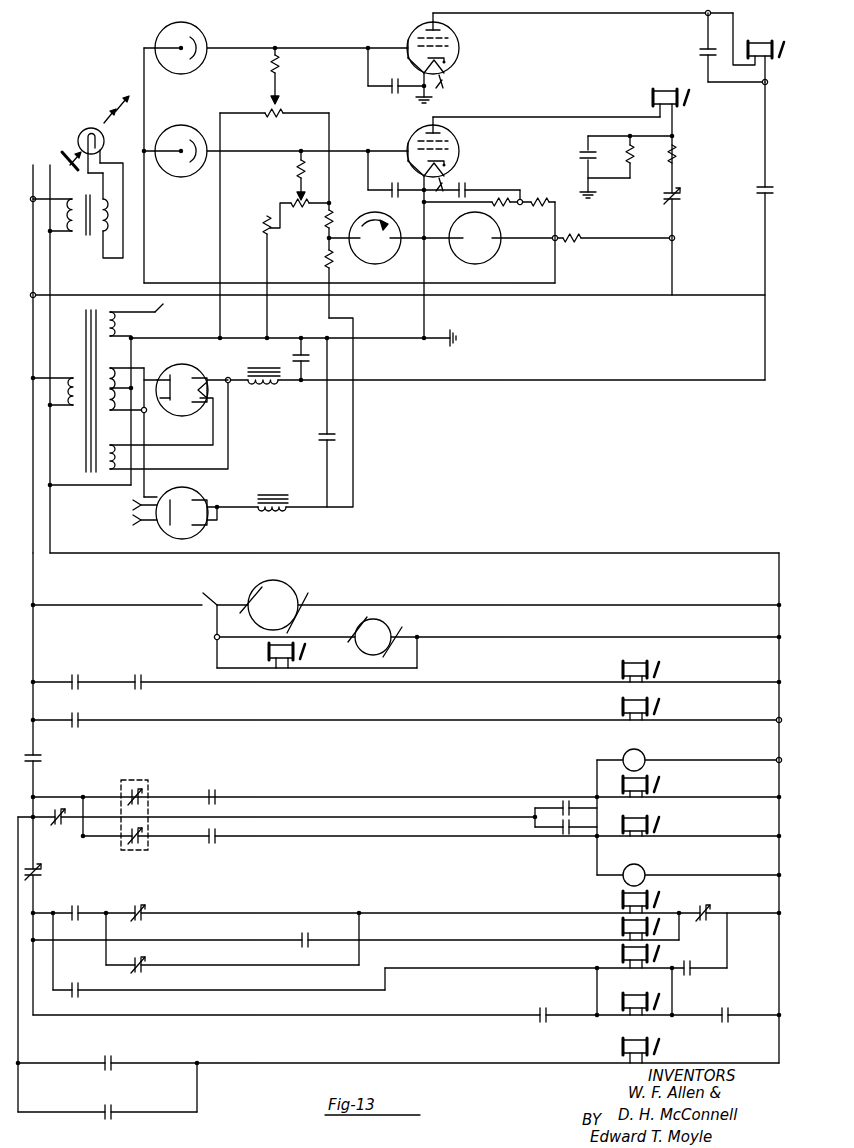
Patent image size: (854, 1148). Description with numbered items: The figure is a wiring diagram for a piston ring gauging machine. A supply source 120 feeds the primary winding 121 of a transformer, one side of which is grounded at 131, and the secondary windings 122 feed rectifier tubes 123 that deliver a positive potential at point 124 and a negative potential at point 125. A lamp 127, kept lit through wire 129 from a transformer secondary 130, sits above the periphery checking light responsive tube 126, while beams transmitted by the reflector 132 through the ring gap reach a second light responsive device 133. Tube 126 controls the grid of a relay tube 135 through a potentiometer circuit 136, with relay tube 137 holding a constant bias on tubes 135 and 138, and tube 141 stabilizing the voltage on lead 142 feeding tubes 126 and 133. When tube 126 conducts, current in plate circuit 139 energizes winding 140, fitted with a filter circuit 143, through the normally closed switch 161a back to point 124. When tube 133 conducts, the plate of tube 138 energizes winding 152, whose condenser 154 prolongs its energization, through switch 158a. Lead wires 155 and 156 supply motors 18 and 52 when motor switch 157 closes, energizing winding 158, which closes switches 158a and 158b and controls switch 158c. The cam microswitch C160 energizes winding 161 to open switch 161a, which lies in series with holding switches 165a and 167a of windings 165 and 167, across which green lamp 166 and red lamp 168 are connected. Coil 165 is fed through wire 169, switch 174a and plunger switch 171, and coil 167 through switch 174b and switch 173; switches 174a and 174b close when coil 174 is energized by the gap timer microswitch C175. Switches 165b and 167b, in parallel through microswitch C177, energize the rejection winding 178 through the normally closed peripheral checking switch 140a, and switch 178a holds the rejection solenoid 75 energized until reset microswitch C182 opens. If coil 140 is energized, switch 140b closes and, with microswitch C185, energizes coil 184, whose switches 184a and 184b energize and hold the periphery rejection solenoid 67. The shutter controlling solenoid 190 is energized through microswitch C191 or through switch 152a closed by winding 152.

The motor 18 is at (284, 591).
The motor 52 is at (363, 652).
The periphery rejection track lifting solenoid 67 is at (631, 995).
The rejection solenoid 75 is at (622, 928).
The supply source 120 is at (38, 172).
The primary winding 121 is at (73, 377).
The secondary windings 122 is at (116, 367).
The rectifier tubes 123 is at (180, 357).
The point of positive potential 124 is at (301, 386).
The point of negative potential 125 is at (319, 437).
The light responsive relay or tube 126 is at (196, 127).
The lamp 127 is at (105, 148).
The wire 129 is at (116, 260).
The transformer secondary 130 is at (87, 240).
The ground 131 is at (457, 337).
The reflector 132 is at (62, 150).
The second light responsive device 133 is at (163, 36).
The relay tube 135 is at (410, 137).
The potentiometer circuit 136 is at (289, 202).
The relay tube 137 is at (382, 264).
The relay tube 138 is at (416, 32).
The plate circuit 139 is at (565, 115).
The winding 140 is at (664, 87).
The peripheral checking switch 140a is at (703, 908).
The switch 140b is at (688, 976).
The tube 141 is at (486, 264).
The lead 142 is at (145, 229).
The filter circuit 143 is at (593, 152).
The winding 152 is at (758, 42).
The switch 152a is at (108, 1119).
The condenser 154 is at (700, 52).
The lead wire 155 is at (34, 578).
The lead wire 156 is at (82, 553).
The motor switch 157 is at (210, 598).
The winding 158 is at (266, 652).
The switch 158a is at (757, 198).
The switch 158b is at (139, 676).
The switch 158c is at (42, 760).
The winding 161 is at (622, 670).
The switch 161a is at (681, 197).
The winding 165 is at (661, 786).
The holding switch 165a is at (566, 800).
The switch 165b is at (139, 906).
The green lamp 166 is at (645, 758).
The winding 167 is at (661, 826).
The holding switch 167a is at (568, 836).
The switch 167b is at (140, 972).
The red lamp 168 is at (645, 870).
The wire 169 is at (362, 789).
The switch 171 is at (135, 782).
The switch 173 is at (130, 852).
The coil 174 is at (622, 708).
The switch 174a is at (212, 790).
The switch 174b is at (212, 843).
The winding 178 is at (622, 900).
The switch 178a is at (302, 934).
The coil 184 is at (622, 954).
The switch 184a is at (543, 1010).
The switch 184b is at (726, 1023).
The shutter controlling solenoid 190 is at (622, 1051).
The cam controlled microswitch C160 is at (80, 668).
The microswitch C175 is at (75, 714).
The cam controlled microswitch C177 is at (76, 906).
The reset microswitch C182 is at (42, 872).
The microswitch C185 is at (70, 996).
The microswitch C191 is at (108, 1056).